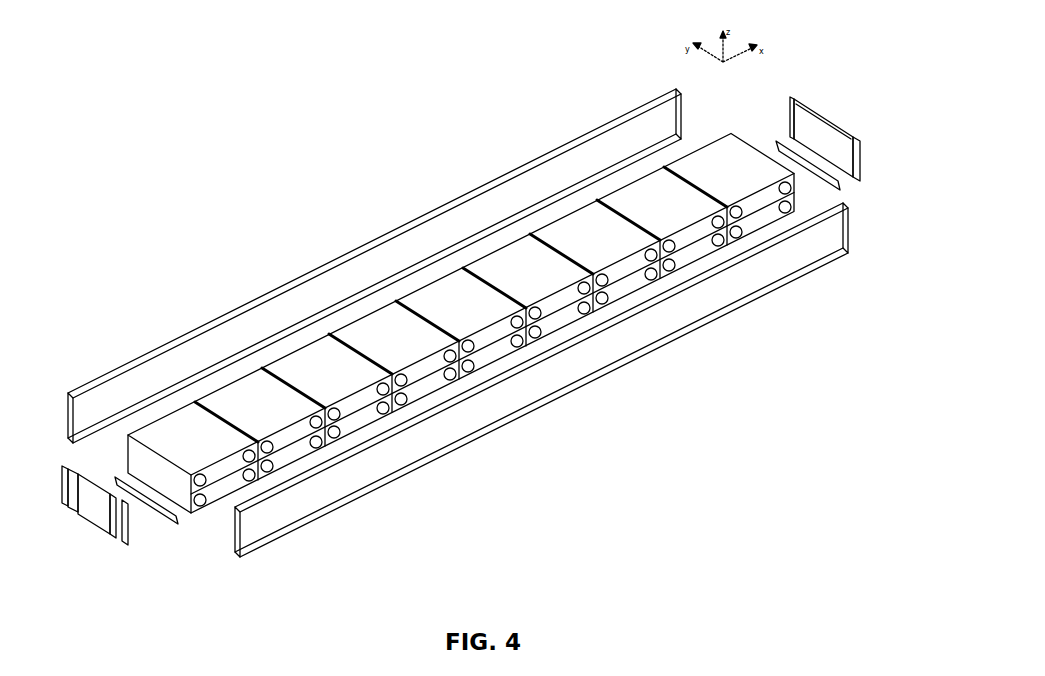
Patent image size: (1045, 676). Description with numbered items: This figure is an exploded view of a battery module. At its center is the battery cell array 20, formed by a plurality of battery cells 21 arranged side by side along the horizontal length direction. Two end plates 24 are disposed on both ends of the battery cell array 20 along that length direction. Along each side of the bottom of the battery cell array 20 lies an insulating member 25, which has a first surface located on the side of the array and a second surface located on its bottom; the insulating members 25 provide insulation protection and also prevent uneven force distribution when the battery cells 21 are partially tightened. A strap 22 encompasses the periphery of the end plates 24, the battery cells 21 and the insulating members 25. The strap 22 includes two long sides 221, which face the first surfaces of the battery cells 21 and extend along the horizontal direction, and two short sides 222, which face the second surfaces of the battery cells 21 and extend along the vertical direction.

The battery cell array 20 is at (461, 281).
The battery cell 21 is at (192, 432).
The strap 22 is at (485, 339).
The long side 221 is at (357, 247).
The short side 222 is at (67, 405).
The end plate 24 is at (96, 507).
The insulating member 25 is at (161, 518).